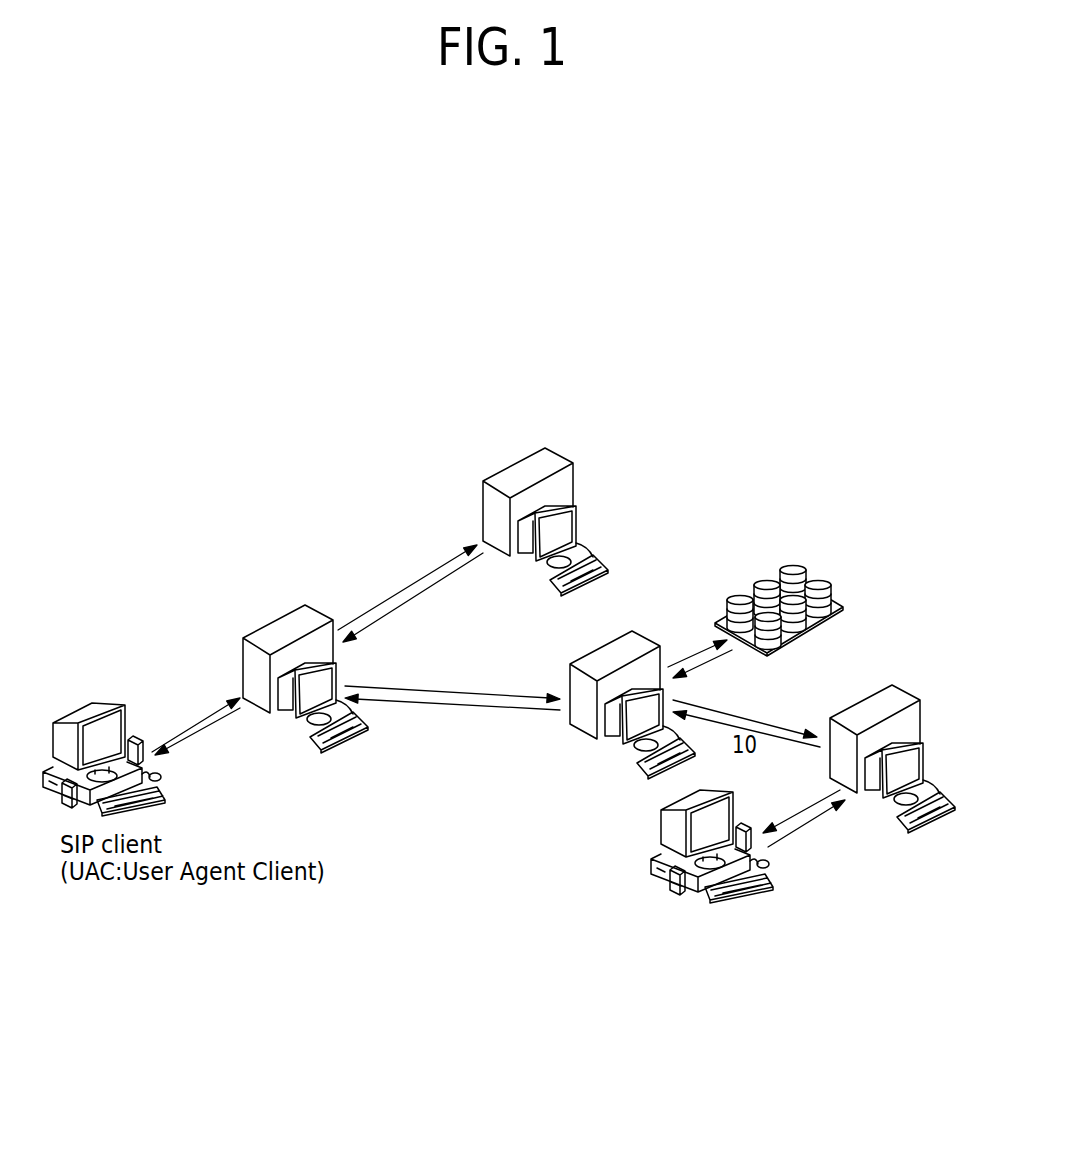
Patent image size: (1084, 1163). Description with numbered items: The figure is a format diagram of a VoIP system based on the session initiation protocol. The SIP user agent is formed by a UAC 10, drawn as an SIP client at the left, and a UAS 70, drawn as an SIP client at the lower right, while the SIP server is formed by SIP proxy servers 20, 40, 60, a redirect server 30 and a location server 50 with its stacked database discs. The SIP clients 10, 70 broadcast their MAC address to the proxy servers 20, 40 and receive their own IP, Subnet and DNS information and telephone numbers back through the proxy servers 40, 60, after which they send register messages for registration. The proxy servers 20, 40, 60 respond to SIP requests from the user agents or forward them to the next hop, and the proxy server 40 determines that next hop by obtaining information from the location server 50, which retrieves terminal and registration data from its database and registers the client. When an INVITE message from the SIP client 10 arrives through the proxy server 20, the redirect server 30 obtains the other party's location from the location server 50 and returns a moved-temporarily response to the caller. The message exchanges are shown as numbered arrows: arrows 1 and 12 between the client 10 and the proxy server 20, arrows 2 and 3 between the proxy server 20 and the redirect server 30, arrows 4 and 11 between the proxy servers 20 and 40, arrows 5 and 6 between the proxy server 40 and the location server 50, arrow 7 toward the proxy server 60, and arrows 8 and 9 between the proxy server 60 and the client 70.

The UAC (User Agent Client) 10 is at (102, 702).
The SIP proxy server 20 is at (318, 610).
The redirect server 30 is at (556, 448).
The SIP proxy server 40 is at (647, 635).
The location server 50 is at (793, 563).
The SIP proxy server 60 is at (903, 687).
The UAS (User Agent Server) 70 is at (653, 863).
The message step 1 (INVITE from UAC to SIP proxy) 1 is at (196, 724).
The message step 2 (request to redirect server) 2 is at (407, 587).
The message step 3 (redirect response) 3 is at (413, 597).
The message step 4 (request forwarded to SIP proxy) 4 is at (452, 686).
The message step 5 (location query) 5 is at (697, 649).
The message step 6 (location response) 6 is at (702, 669).
The message step 7 (request forwarded to SIP proxy) 7 is at (745, 716).
The message step 8 (request to UAS) 8 is at (801, 810).
The message step 9 (response from UAS) 9 is at (806, 825).
The message step 11 (response to SIP proxy) 11 is at (452, 716).
The message step 12 (response to UAC) 12 is at (197, 734).